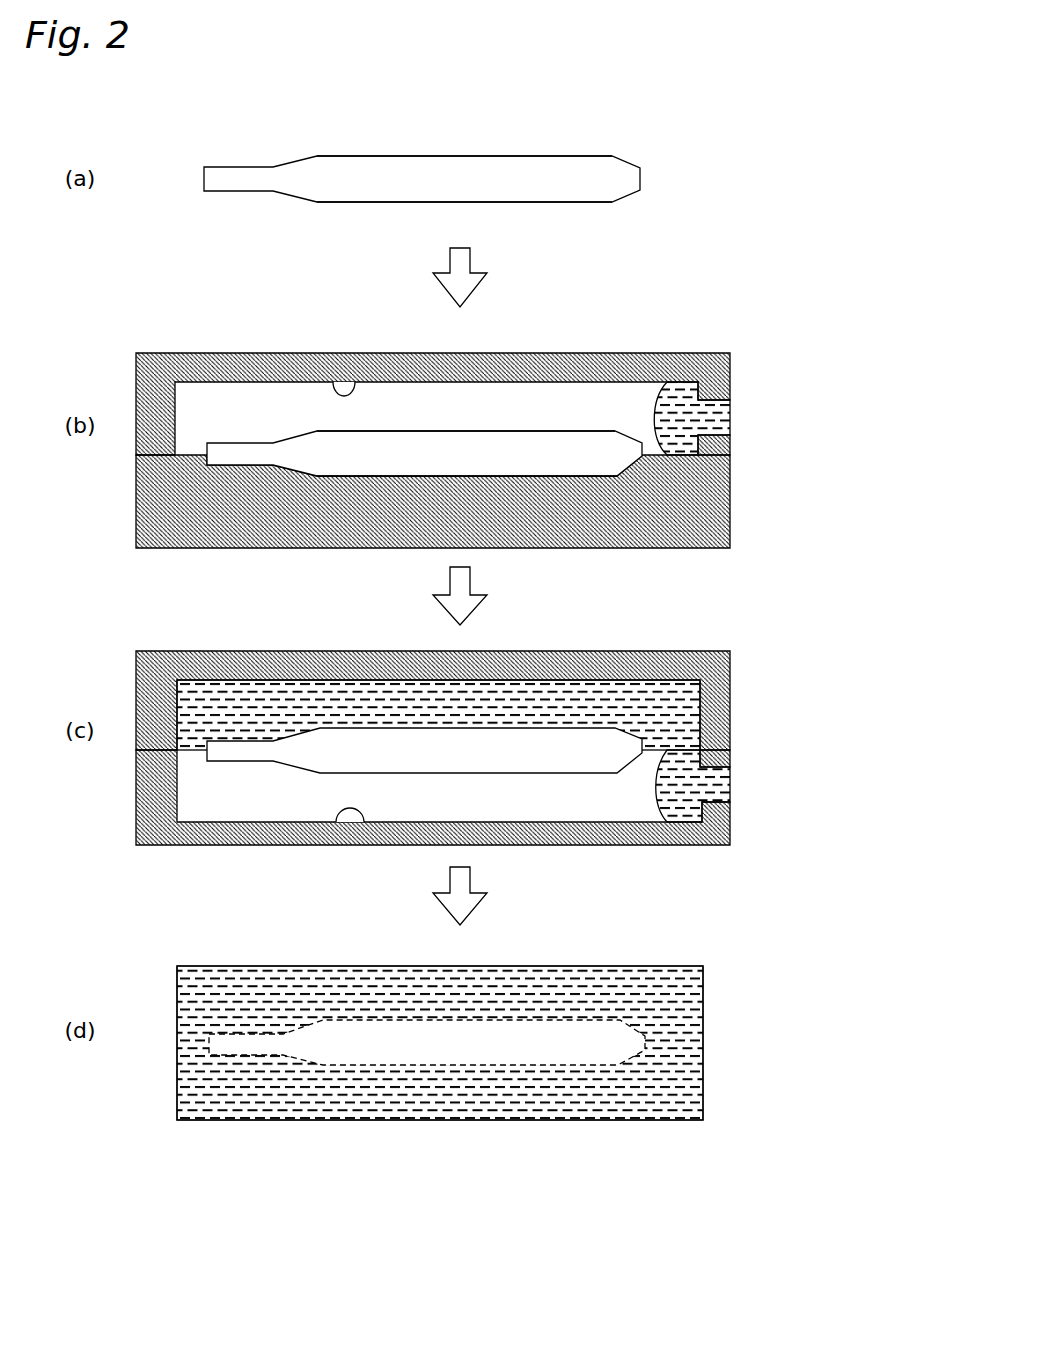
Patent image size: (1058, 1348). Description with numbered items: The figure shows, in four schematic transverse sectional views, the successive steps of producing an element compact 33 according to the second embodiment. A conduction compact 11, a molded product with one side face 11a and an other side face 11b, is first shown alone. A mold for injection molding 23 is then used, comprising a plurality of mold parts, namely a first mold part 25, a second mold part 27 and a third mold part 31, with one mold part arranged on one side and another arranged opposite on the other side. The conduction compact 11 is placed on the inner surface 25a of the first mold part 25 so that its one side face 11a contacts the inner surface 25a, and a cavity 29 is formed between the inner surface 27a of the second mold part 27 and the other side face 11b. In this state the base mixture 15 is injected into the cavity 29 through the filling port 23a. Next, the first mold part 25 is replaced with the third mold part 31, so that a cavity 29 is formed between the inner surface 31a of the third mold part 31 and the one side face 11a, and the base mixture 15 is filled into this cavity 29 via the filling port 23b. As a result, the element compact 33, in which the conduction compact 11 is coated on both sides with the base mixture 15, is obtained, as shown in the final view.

The conduction compact 11 is at (543, 187).
The one side face of the conduction compact 11a is at (394, 203).
The other side face of the conduction compact 11b is at (362, 155).
The base mixture 15 is at (672, 397).
The mold for injection molding 23 is at (807, 410).
The filling port 23a is at (715, 400).
The filling port 23b is at (717, 803).
The first mold part 25 is at (730, 493).
The inner surface of the first mold part 25a is at (347, 470).
The second mold part 27 is at (730, 377).
The inner surface of the second mold part 27a is at (337, 383).
The cavity 29 is at (268, 395).
The third mold part 31 is at (730, 830).
The inner surface of the third mold part 31a is at (330, 817).
The element compact 33 is at (680, 965).